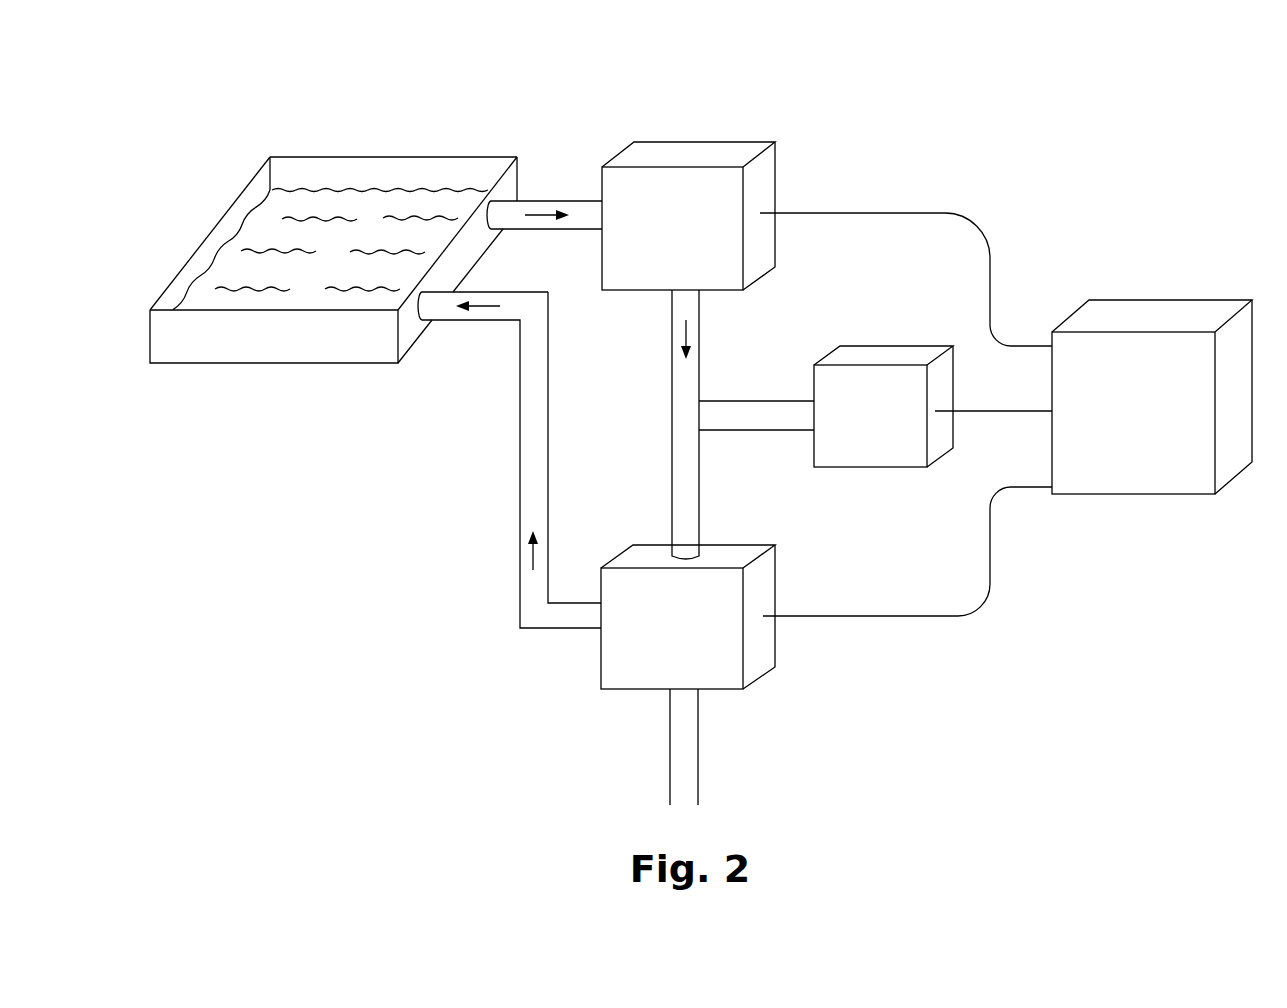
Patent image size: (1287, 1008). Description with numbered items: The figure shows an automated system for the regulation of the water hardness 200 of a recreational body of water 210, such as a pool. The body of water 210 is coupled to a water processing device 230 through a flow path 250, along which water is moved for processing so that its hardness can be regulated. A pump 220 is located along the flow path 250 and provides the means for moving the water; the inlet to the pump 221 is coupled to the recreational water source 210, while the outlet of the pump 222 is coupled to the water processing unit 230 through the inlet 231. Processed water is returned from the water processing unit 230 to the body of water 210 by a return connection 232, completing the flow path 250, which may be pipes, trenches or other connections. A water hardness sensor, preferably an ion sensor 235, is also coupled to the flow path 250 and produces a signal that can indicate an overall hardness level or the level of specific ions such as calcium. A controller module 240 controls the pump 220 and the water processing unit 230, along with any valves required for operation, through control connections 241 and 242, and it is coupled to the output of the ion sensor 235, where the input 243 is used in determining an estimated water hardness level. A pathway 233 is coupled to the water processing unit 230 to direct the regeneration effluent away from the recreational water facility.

The water hardness regulation system 200 is at (1106, 106).
The recreational body of water 210 is at (380, 177).
The pump 220 is at (688, 158).
The pump inlet 221 is at (597, 215).
The pump outlet 222 is at (693, 300).
The water processing device 230 is at (725, 555).
The water processing unit inlet 231 is at (657, 555).
The water processing return outlet pipe 232 is at (588, 615).
The pathway 233 is at (680, 703).
The ion sensor 235 is at (882, 356).
The controller module 240 is at (1140, 313).
The pump control line 241 is at (808, 212).
The water processing control line 242 is at (793, 618).
The input 243 is at (1036, 411).
The flow path 250 is at (538, 224).